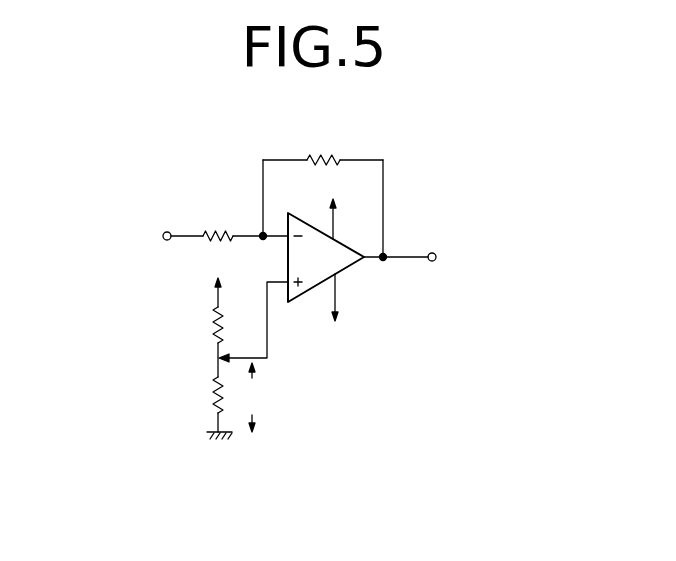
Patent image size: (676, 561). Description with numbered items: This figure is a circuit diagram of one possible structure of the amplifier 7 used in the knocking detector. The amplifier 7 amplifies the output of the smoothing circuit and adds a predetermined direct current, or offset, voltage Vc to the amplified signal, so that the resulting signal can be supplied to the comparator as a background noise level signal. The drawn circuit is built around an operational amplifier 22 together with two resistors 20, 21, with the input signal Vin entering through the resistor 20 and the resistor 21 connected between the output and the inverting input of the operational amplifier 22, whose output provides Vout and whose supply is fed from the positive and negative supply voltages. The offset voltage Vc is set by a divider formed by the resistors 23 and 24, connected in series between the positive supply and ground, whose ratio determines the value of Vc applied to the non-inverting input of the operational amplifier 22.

The amplifier 7 is at (412, 150).
The resistor 20 is at (215, 222).
The resistor 21 is at (318, 155).
The operational amplifier 22 is at (352, 265).
The resistor 23 is at (212, 322).
The resistor 24 is at (212, 395).